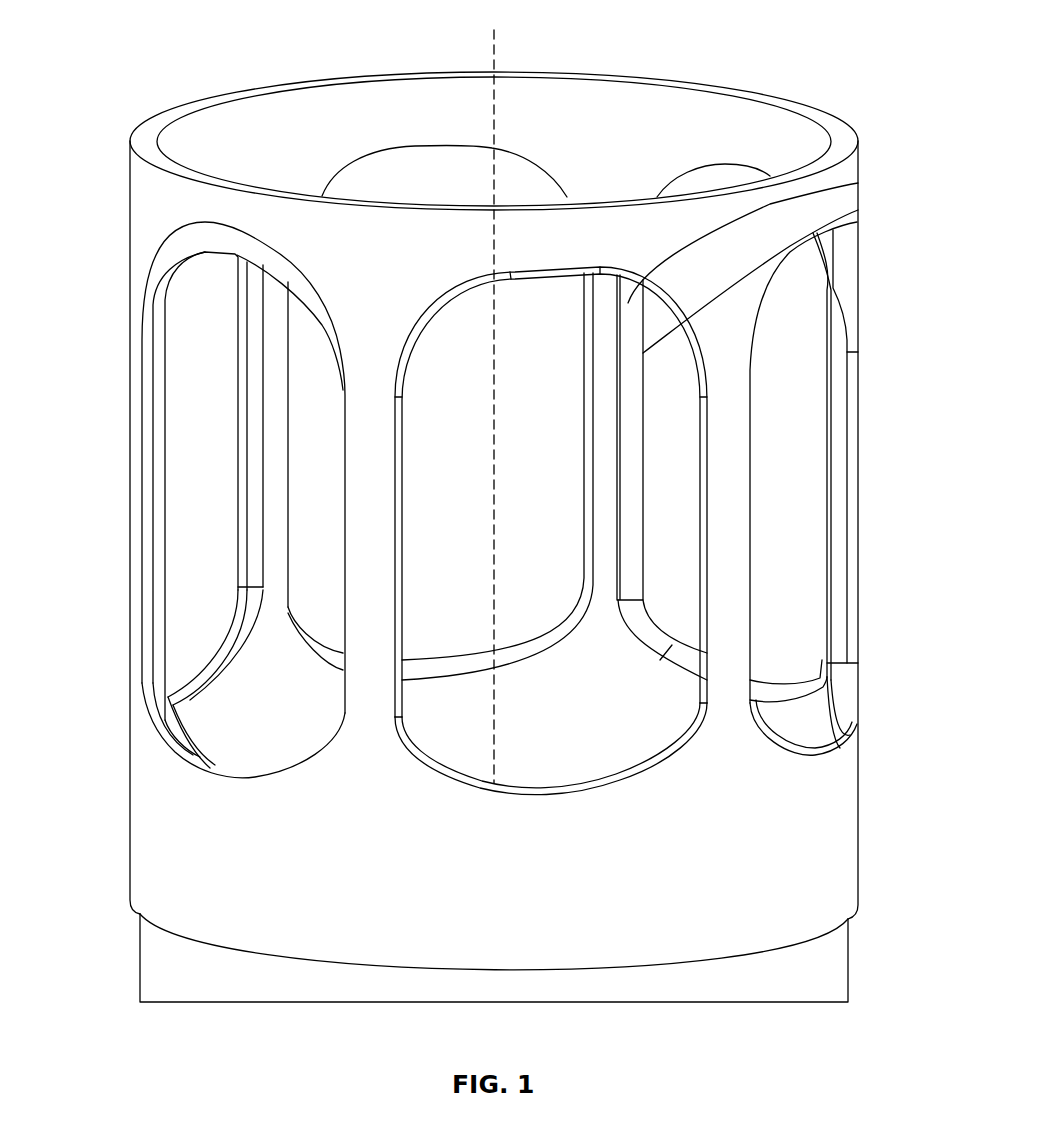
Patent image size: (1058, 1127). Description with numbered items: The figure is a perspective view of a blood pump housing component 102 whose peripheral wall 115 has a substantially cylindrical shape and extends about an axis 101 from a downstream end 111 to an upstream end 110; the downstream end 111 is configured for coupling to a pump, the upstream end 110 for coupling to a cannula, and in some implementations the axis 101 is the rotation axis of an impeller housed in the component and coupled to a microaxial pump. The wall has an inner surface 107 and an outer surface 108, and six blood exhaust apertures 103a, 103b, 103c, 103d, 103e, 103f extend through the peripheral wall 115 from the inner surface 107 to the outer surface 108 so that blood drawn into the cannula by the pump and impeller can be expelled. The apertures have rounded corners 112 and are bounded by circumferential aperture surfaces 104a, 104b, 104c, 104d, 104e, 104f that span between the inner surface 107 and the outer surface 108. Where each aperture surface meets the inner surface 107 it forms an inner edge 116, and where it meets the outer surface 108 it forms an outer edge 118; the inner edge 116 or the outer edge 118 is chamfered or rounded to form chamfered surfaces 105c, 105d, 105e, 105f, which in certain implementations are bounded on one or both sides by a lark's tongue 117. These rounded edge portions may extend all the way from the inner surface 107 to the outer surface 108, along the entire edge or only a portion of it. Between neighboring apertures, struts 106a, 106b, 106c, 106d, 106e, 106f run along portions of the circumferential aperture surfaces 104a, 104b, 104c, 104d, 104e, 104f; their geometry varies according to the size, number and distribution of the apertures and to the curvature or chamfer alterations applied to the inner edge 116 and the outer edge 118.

The axis 101 is at (499, 39).
The blood pump housing component 102 is at (485, 532).
The blood exhaust aperture 103a is at (551, 663).
The blood exhaust aperture 103b is at (850, 489).
The blood exhaust aperture 103c is at (733, 176).
The blood exhaust aperture 103d is at (505, 184).
The blood exhaust aperture 103e is at (192, 510).
The blood exhaust aperture 103f is at (197, 500).
The circumferential aperture surface 104a is at (562, 798).
The circumferential aperture surface 104b is at (850, 721).
The circumferential aperture surface 104c is at (777, 697).
The circumferential aperture surface 104d is at (562, 633).
The circumferential aperture surface 104e is at (193, 692).
The circumferential aperture surface 104f is at (162, 717).
The chamfered surface 105c is at (838, 493).
The chamfered surface 105d is at (822, 190).
The chamfered surface 105e is at (248, 352).
The chamfered surface 105f is at (158, 463).
The strut 106a is at (363, 720).
The strut 106b is at (733, 708).
The strut 106c is at (855, 395).
The strut 106d is at (828, 222).
The strut 106e is at (240, 278).
The strut 106f is at (147, 508).
The inner surface 107 is at (247, 750).
The outer surface 108 is at (198, 908).
The upstream end 110 is at (130, 151).
The downstream end 111 is at (136, 915).
The rounded corner 112 is at (397, 731).
The peripheral wall 115 is at (834, 873).
The inner edge 116 is at (267, 518).
The lark's tongue 117 is at (833, 288).
The outer edge 118 is at (233, 530).